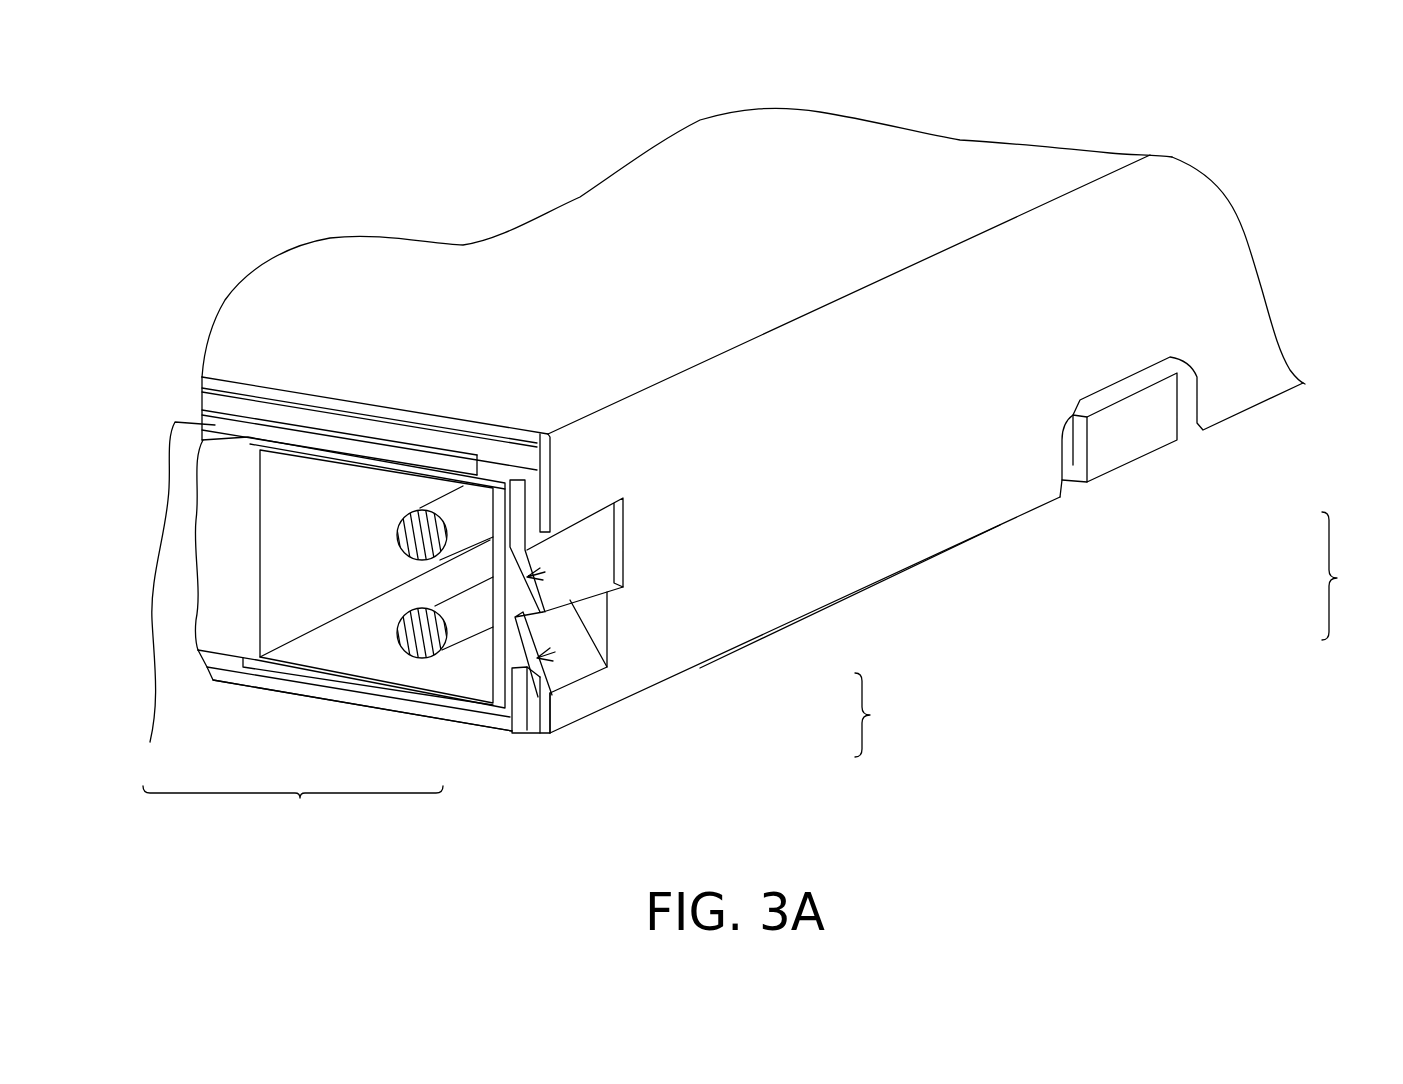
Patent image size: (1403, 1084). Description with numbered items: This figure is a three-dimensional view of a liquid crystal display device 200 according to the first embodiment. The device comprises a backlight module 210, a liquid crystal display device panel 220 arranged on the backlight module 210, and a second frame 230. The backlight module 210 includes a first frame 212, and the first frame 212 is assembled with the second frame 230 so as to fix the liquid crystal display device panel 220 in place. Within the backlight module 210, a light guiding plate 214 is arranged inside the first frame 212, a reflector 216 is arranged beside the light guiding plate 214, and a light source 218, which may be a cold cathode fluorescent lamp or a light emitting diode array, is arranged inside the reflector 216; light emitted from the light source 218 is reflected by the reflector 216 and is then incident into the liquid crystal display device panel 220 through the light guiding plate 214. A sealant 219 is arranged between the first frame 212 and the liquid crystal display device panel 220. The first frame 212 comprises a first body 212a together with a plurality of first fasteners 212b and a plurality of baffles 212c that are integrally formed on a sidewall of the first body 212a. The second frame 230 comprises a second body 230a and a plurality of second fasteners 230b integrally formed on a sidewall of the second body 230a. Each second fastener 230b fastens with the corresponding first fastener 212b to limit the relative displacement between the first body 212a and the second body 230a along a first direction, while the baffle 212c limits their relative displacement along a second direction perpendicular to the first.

The liquid crystal display device 200 is at (1332, 795).
The backlight module 210 is at (293, 813).
The first frame 212 is at (430, 707).
The first body 212a is at (533, 714).
The first fasteners 212b is at (527, 577).
The baffles 212c is at (1130, 447).
The light guiding plate 214 is at (220, 637).
The reflector 216 is at (287, 668).
The light source 218 is at (417, 637).
The sealant 219 is at (171, 602).
The liquid crystal display device panel 220 is at (213, 403).
The second frame 230 is at (886, 715).
The second body 230a is at (688, 645).
The second fasteners 230b is at (537, 658).